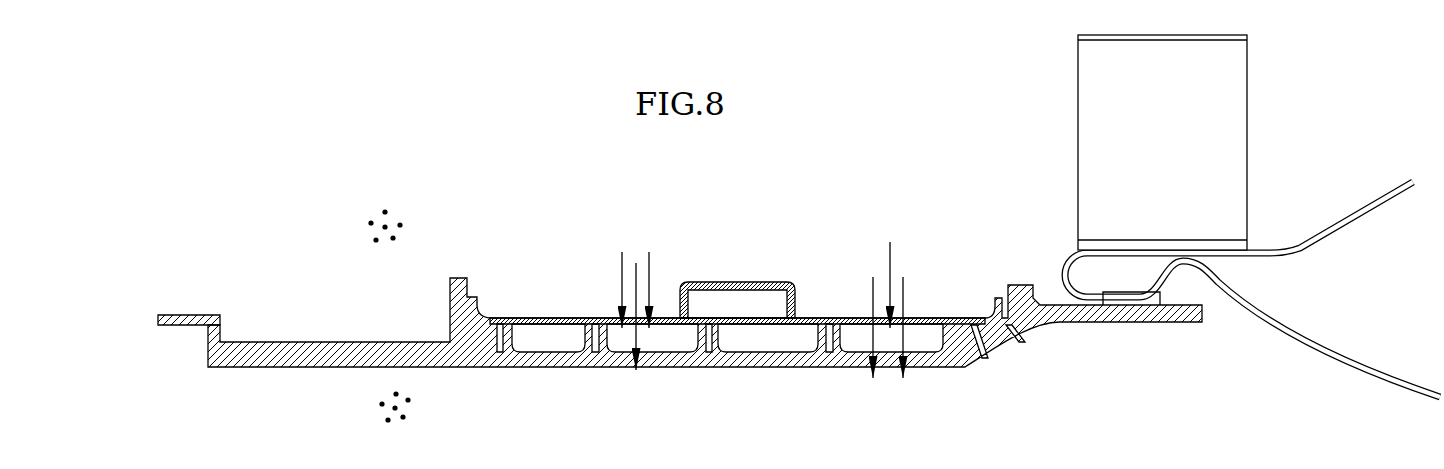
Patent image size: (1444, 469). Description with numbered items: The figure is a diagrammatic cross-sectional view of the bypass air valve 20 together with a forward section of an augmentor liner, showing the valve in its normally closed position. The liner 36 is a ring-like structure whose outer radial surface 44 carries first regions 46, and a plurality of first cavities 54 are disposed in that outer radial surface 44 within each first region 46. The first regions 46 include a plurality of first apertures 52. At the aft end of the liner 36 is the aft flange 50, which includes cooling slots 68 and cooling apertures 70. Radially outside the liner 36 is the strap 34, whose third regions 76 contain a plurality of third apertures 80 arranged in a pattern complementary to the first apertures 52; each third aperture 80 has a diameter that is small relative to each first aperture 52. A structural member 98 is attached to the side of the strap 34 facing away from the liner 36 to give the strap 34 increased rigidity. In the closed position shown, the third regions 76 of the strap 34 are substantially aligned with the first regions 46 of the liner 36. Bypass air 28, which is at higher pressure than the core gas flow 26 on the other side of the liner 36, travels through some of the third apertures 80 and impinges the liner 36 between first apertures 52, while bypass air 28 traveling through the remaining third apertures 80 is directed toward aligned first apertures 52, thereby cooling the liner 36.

The bypass air valve 20 is at (688, 277).
The core gas flow 26 is at (410, 408).
The bypass air flow 28 is at (377, 212).
The strap 34 is at (984, 314).
The liner 36 is at (205, 312).
The outer radial surface 44 is at (478, 312).
The first regions 46 is at (803, 325).
The aft flange 50 is at (1152, 322).
The first apertures 52 is at (803, 355).
The first cavities 54 is at (545, 338).
The cooling slots 68 is at (1168, 305).
The cooling apertures 70 is at (1012, 332).
The third regions 76 is at (540, 318).
The third apertures 80 is at (555, 318).
The structural member 98 is at (677, 285).